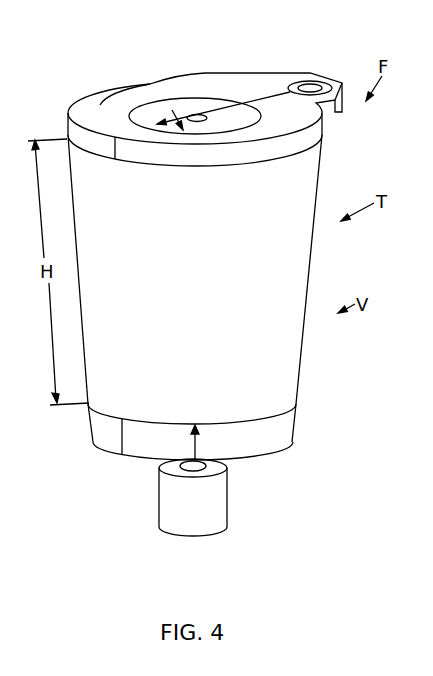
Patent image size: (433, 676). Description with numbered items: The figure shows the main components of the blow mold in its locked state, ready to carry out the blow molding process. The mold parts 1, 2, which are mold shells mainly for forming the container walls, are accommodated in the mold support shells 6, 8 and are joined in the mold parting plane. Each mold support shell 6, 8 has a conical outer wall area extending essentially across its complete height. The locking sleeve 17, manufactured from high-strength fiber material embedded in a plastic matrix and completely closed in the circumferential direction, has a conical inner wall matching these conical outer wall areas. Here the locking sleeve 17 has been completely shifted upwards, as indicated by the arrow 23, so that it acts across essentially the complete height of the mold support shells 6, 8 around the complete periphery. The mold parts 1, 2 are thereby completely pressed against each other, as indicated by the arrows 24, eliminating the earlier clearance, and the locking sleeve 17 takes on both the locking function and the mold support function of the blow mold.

The mold part 1 is at (163, 112).
The mold part 2 is at (230, 117).
The mold support shell 6 is at (88, 113).
The mold support shell 8 is at (297, 122).
The locking sleeve 17 is at (321, 267).
The arrow 23 is at (197, 443).
The arrows 24 is at (121, 97).